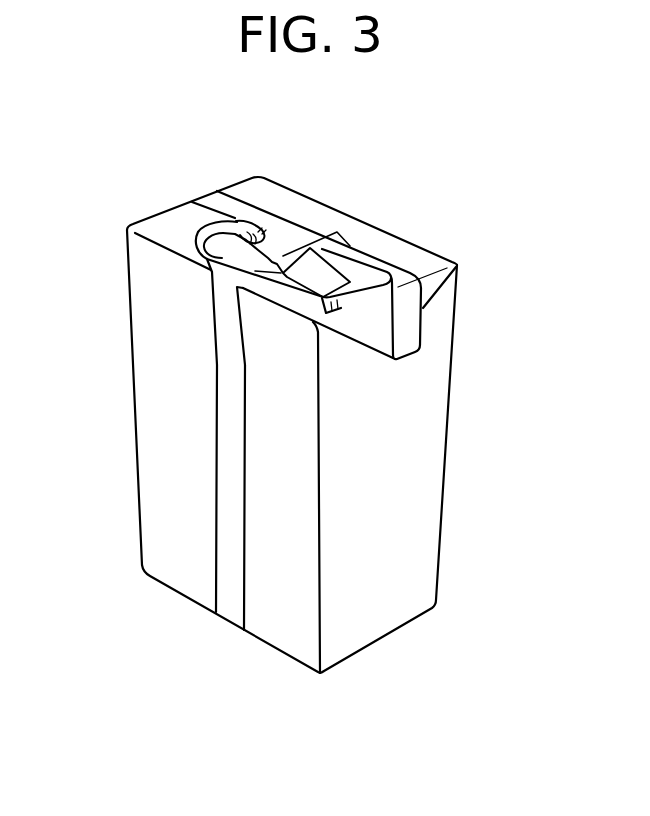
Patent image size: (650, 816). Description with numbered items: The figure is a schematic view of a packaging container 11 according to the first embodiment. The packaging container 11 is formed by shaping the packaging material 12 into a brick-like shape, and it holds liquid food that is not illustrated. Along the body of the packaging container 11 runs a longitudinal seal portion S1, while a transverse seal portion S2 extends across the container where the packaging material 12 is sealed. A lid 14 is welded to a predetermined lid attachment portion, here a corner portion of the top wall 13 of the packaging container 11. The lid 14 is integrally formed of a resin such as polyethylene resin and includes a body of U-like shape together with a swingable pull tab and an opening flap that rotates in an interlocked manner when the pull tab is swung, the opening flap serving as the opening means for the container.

The packaging container 11 is at (452, 432).
The packaging material 12 is at (417, 567).
The top wall 13 is at (412, 256).
The lid 14 is at (290, 291).
The longitudinal seal portion S1 is at (230, 450).
The transverse seal portion S2 is at (325, 247).